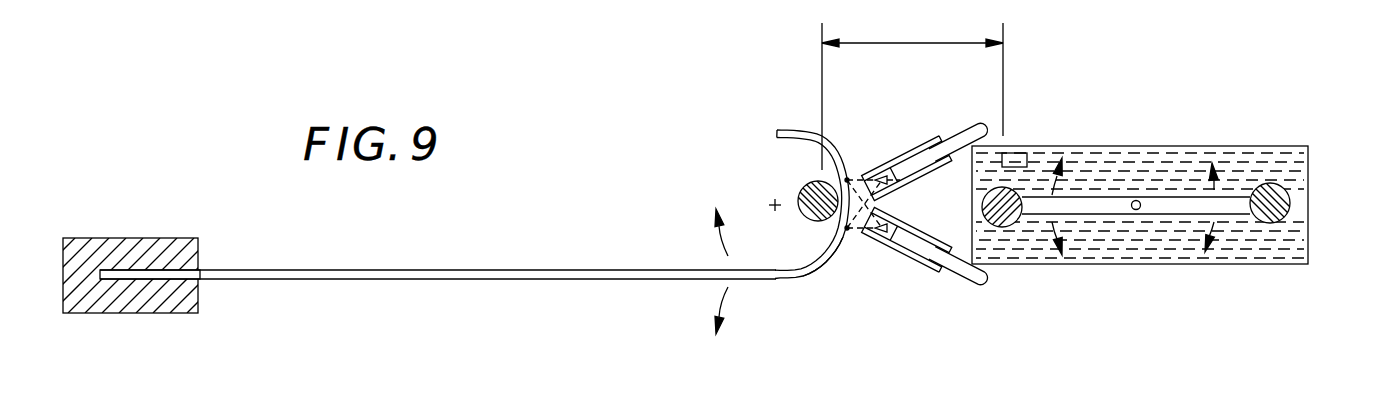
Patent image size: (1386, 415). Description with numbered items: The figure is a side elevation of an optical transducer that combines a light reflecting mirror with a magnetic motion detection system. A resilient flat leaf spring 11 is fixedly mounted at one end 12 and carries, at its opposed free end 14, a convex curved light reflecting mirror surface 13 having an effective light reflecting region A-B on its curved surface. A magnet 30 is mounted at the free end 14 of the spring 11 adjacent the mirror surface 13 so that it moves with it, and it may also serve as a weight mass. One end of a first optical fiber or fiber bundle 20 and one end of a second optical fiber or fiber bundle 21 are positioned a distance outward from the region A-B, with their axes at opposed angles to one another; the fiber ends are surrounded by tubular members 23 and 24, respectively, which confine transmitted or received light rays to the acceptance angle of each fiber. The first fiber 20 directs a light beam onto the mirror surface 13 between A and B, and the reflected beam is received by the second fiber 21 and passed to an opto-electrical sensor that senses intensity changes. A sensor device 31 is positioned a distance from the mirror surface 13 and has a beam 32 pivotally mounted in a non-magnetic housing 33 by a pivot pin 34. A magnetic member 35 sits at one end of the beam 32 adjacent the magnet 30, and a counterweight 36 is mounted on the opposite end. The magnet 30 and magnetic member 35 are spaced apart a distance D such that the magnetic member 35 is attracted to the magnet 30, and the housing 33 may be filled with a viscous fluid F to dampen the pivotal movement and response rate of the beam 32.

The resilient flat leaf spring 11 is at (397, 270).
The fixed end 12 is at (138, 270).
The convex curved light reflecting mirror surface 13 is at (791, 131).
The free end 14 is at (812, 267).
The first optical fiber or fiber bundle 20 is at (964, 132).
The second optical fiber or fiber bundle 21 is at (962, 284).
The tubular member 23 is at (921, 142).
The tubular member 24 is at (916, 268).
The magnet 30 is at (805, 187).
The sensor device 31 is at (1163, 198).
The beam 32 is at (1163, 200).
The non-magnetic housing 33 is at (1297, 147).
The pivot pin 34 is at (1134, 209).
The magnetic member 35 is at (1012, 198).
The counterweight 36 is at (1289, 206).
The light reflecting region end point A is at (848, 179).
The light reflecting region end point B is at (847, 229).
The distance D is at (912, 92).
The viscous fluid F is at (1250, 255).